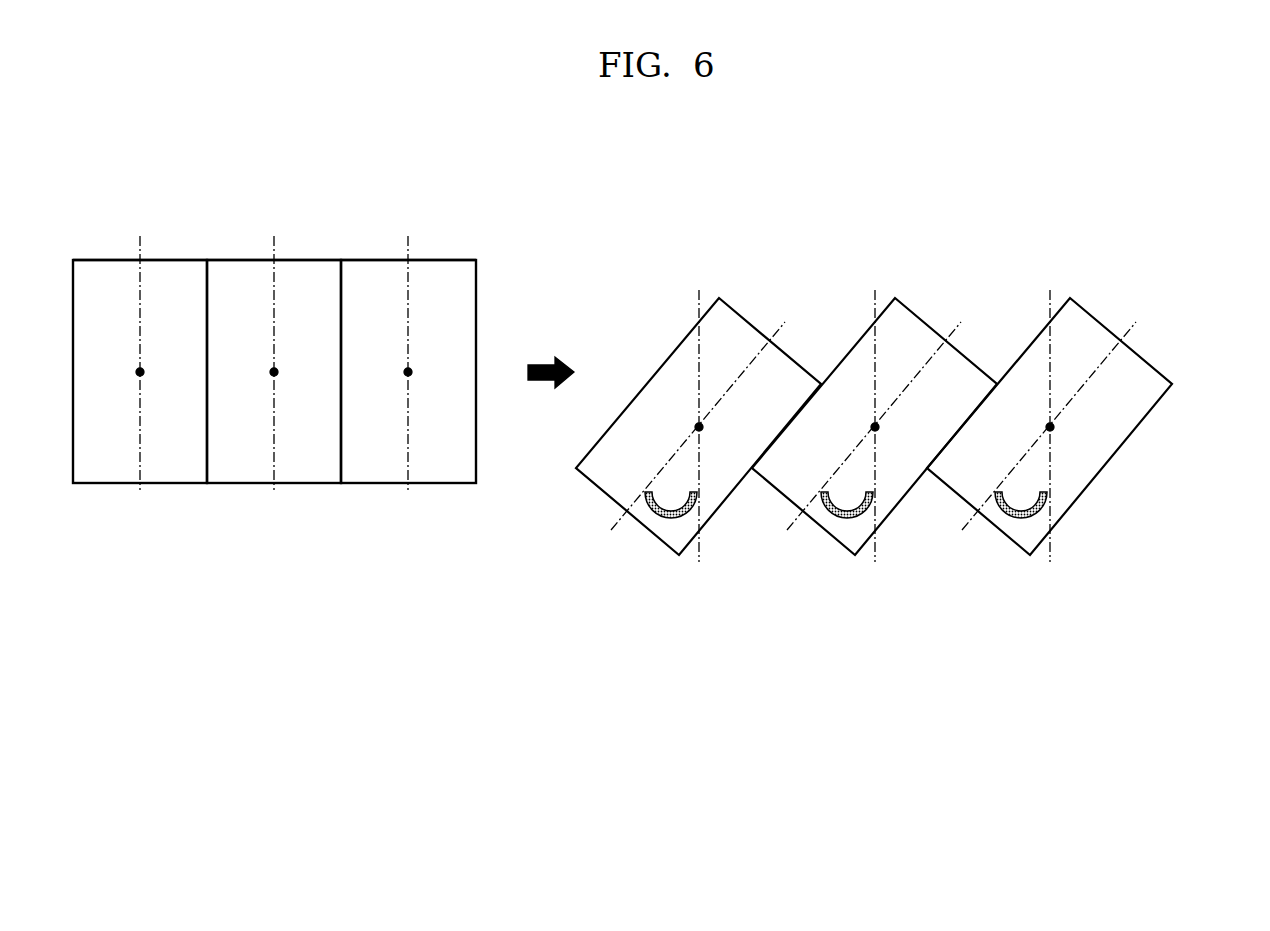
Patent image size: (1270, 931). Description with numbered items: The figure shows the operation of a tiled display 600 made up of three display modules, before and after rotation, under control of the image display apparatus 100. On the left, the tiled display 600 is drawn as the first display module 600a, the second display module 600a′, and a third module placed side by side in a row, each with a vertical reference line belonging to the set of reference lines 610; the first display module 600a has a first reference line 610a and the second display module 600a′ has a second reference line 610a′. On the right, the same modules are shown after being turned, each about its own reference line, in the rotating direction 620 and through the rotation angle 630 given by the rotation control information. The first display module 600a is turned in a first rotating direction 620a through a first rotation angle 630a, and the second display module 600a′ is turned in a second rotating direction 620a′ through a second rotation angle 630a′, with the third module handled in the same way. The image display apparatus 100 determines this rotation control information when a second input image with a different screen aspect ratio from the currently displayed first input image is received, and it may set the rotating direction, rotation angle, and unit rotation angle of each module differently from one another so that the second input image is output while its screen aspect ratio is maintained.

The image display apparatus 100 is at (500, 266).
The tiled display 600 is at (457, 212).
The first display module 600a is at (174, 272).
The second display module 600a′ is at (309, 272).
The reference lines 610 is at (143, 558).
The first reference line 610a is at (140, 492).
The second reference line 610a′ is at (274, 492).
The rotating direction 620 is at (1107, 248).
The first rotating direction 620a is at (745, 305).
The second rotating direction 620a′ is at (920, 305).
The rotation angle 630 is at (767, 611).
The first rotation angle 630a is at (682, 513).
The second rotation angle 630a′ is at (840, 520).